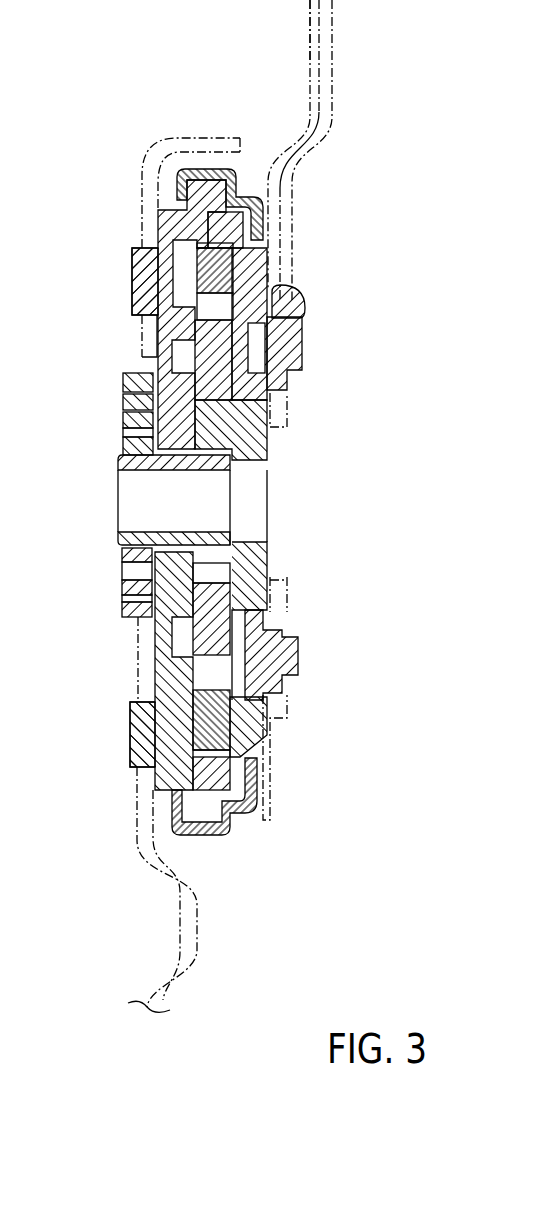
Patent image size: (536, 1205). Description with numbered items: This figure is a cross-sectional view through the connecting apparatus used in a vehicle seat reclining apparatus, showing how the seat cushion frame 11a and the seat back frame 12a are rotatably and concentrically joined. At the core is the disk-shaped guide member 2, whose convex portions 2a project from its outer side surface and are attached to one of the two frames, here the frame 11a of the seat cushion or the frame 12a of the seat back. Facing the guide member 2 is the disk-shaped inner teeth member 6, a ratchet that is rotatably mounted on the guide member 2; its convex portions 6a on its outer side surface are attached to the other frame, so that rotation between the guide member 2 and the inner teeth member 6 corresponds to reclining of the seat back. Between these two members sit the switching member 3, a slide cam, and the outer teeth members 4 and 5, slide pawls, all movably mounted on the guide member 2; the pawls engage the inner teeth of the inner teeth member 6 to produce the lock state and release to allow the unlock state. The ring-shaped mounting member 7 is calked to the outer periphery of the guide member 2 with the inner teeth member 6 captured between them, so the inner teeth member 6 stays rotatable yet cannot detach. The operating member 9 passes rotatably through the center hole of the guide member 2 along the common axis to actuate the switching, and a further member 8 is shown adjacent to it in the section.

The guide member 2 is at (163, 672).
The convex portions 2a is at (140, 285).
The switching member 3 is at (215, 350).
The outer teeth member 4 is at (228, 275).
The outer teeth member 5 is at (200, 732).
The inner teeth member 6 is at (252, 438).
The convex portions 6a is at (302, 366).
The mounting member 7 is at (223, 831).
The elastic member 8 is at (123, 377).
The operating member 9 is at (148, 465).
The frame of the seat cushion 11a is at (170, 878).
The frame of the seat back 12a is at (332, 28).